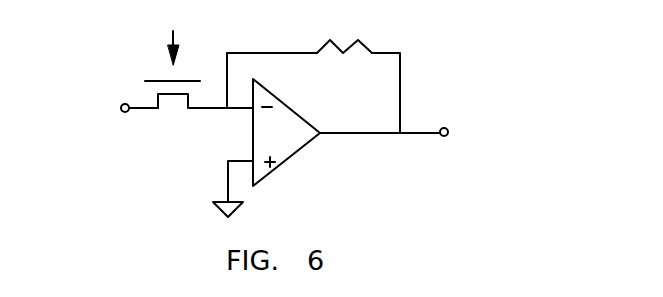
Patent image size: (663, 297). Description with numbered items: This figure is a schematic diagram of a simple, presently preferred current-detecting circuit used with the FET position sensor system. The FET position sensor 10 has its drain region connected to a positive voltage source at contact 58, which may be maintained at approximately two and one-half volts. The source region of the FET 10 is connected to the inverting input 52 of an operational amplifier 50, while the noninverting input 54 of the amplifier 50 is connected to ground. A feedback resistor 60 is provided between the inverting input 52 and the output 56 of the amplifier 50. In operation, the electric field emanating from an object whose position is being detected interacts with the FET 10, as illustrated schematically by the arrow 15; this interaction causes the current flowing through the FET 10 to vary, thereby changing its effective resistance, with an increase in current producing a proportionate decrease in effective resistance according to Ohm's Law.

The FET position sensor 10 is at (170, 97).
The arrow 15 is at (173, 36).
The operational amplifier 50 is at (267, 143).
The inverting input 52 is at (250, 110).
The noninverting input 54 is at (250, 167).
The output 56 is at (447, 124).
The positive voltage source contact 58 is at (122, 106).
The feedback resistor 60 is at (327, 43).